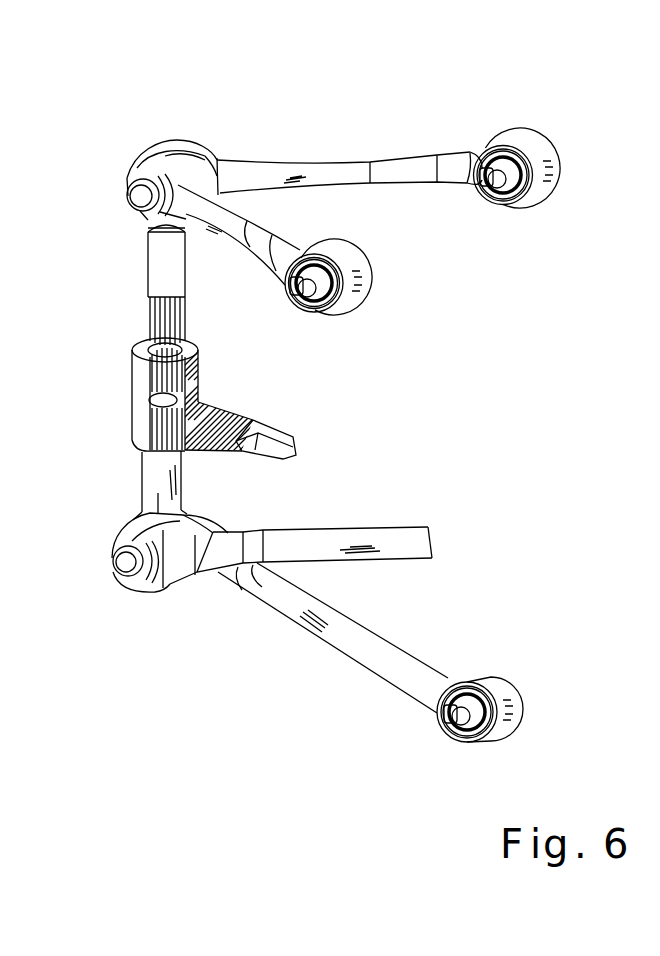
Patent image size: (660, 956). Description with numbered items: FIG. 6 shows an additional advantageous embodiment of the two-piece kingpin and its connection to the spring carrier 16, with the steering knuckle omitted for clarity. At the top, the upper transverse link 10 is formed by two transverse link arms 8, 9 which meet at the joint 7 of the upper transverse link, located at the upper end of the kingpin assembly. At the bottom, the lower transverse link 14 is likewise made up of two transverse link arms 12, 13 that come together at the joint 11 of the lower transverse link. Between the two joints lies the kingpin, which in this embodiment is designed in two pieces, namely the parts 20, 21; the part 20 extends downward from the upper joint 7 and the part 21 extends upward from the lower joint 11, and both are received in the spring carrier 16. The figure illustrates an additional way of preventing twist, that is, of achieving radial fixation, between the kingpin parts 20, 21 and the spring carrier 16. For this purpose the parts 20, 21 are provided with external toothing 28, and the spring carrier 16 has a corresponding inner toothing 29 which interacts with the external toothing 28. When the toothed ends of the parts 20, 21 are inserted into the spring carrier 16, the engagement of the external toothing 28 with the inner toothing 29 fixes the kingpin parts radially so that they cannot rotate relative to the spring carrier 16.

The joint of the upper transverse link 7 is at (160, 128).
The transverse link arm 8 is at (382, 173).
The transverse link arm 9 is at (215, 217).
The upper transverse link 10 is at (272, 145).
The joint of the lower transverse link 11 is at (119, 598).
The transverse link arm 12 is at (375, 541).
The transverse link arm 13 is at (348, 637).
The lower transverse link 14 is at (248, 516).
The spring carrier 16 is at (180, 452).
The kingpin part 20 is at (163, 248).
The kingpin part 21 is at (113, 559).
The external toothing 28 is at (150, 313).
The inner toothing 29 is at (157, 375).